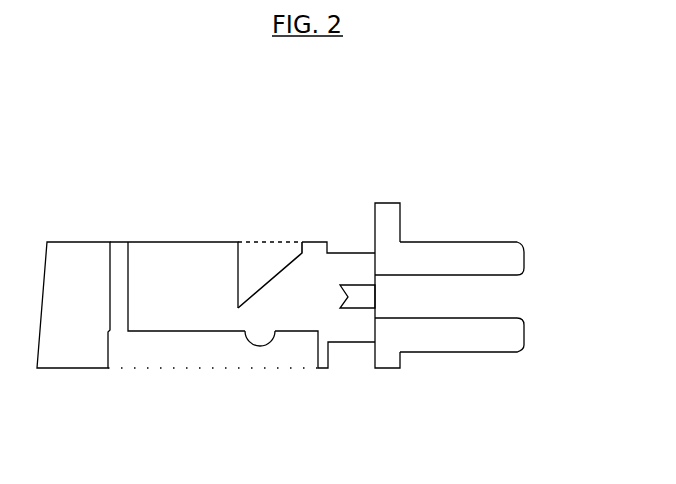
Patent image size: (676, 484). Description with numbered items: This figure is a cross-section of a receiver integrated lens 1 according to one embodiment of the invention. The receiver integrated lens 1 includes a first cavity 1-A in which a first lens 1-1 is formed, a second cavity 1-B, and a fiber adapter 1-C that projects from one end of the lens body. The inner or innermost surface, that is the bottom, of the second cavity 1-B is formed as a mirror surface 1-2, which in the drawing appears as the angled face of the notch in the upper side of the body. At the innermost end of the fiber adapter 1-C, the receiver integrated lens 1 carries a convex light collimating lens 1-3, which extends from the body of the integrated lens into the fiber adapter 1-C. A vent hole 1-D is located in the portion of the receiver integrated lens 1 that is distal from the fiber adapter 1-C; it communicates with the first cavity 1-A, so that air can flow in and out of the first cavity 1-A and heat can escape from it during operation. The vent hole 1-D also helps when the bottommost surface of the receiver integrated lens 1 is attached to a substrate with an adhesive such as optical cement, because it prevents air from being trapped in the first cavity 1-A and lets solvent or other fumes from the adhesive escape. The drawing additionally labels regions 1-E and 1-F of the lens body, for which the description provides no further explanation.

The receiver integrated lens 1 is at (279, 102).
The first cavity 1-A is at (177, 353).
The second cavity 1-B is at (252, 263).
The fiber adapter 1-C is at (422, 315).
The vent hole 1-D is at (113, 285).
The main body 1-E is at (187, 242).
The lower body 1-F is at (163, 320).
The first lens 1-1 is at (273, 350).
The mirror surface 1-2 is at (264, 290).
The convex light collimating lens 1-3 is at (375, 275).